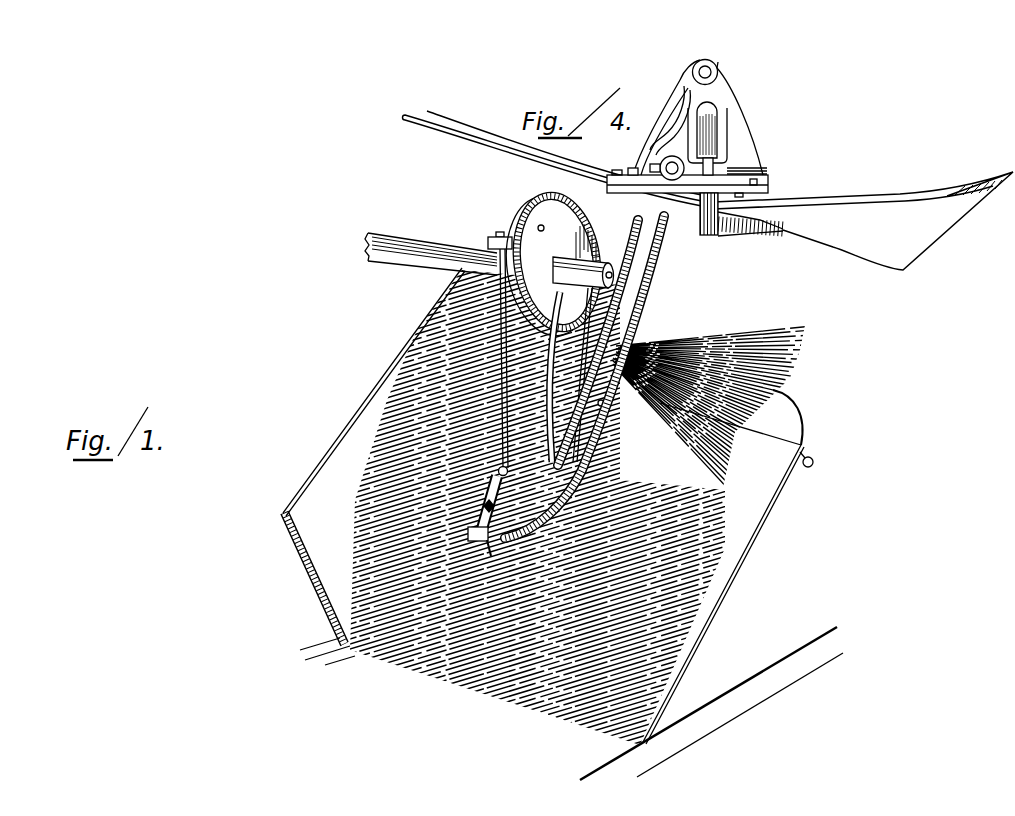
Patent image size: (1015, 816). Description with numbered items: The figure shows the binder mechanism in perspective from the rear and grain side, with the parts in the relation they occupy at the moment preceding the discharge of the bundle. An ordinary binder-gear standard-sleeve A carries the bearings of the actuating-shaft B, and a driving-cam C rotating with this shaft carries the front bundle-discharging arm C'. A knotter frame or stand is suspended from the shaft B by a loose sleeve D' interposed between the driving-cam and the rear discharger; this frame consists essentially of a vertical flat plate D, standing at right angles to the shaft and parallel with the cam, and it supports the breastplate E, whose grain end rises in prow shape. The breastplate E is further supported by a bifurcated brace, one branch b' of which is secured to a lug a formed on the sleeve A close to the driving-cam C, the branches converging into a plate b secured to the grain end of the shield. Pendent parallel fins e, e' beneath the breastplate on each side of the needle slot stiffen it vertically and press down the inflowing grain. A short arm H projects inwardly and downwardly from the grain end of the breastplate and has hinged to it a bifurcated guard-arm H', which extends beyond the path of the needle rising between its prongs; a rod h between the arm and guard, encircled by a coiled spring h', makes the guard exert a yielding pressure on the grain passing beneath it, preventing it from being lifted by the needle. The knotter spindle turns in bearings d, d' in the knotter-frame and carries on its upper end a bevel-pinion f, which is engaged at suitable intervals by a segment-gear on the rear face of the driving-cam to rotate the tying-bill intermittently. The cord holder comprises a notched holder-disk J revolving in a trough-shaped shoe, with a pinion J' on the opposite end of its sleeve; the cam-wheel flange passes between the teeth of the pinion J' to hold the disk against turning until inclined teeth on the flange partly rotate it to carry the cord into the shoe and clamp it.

In FIG. 1, the binder-gear standard-sleeve A is at (431, 244).
In FIG. 1, the lugs or ears a is at (490, 242).
In FIG. 1, the actuating-shaft B is at (613, 264).
In FIG. 1, the plate b is at (487, 469).
In FIG. 1, the branch of bifurcated brace b' is at (450, 292).
In FIG. 1, the driving-cam C is at (554, 264).
In FIG. 1, the front bundle-discharging arm C' is at (556, 375).
In FIG. 4, the vertical flat plate D is at (705, 117).
In FIG. 4, the loose sleeve D' is at (706, 65).
In FIG. 4, the bearing d is at (730, 125).
In FIG. 4, the bearing d' is at (663, 119).
In FIG. 4, the breastplate E is at (822, 190).
In FIG. 4, the pendent fin or rib e is at (742, 239).
In FIG. 4, the pendent fin or rib e' is at (863, 221).
In FIG. 1, the bevel-pinion f is at (608, 325).
In FIG. 4, the bevel-pinion f is at (713, 130).
In FIG. 1, the short arm H is at (570, 483).
In FIG. 1, the bifurcated guard-arm H' is at (758, 468).
In FIG. 1, the rod h is at (469, 508).
In FIG. 1, the coiled spring h' is at (495, 559).
In FIG. 4, the holder-disk J is at (701, 166).
In FIG. 4, the pinion J' is at (627, 157).